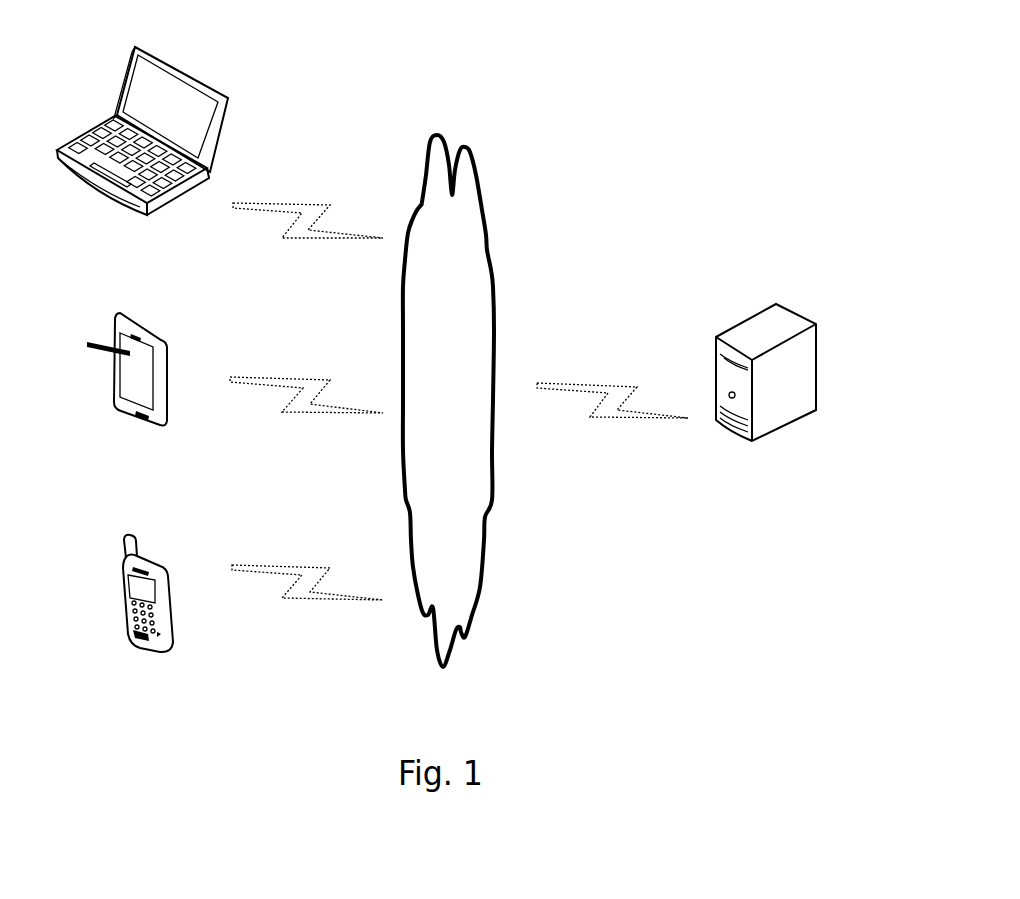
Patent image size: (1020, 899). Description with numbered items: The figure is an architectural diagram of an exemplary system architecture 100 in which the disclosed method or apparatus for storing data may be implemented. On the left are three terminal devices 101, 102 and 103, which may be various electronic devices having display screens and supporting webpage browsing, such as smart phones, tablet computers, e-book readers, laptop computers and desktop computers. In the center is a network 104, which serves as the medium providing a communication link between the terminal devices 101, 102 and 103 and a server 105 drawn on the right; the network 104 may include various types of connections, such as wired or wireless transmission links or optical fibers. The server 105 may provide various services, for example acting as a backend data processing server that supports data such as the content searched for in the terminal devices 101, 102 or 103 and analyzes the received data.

The system architecture 100 is at (719, 35).
The terminal device 101 is at (148, 612).
The terminal device 102 is at (127, 391).
The terminal device 103 is at (142, 151).
The network 104 is at (448, 401).
The server 105 is at (766, 396).